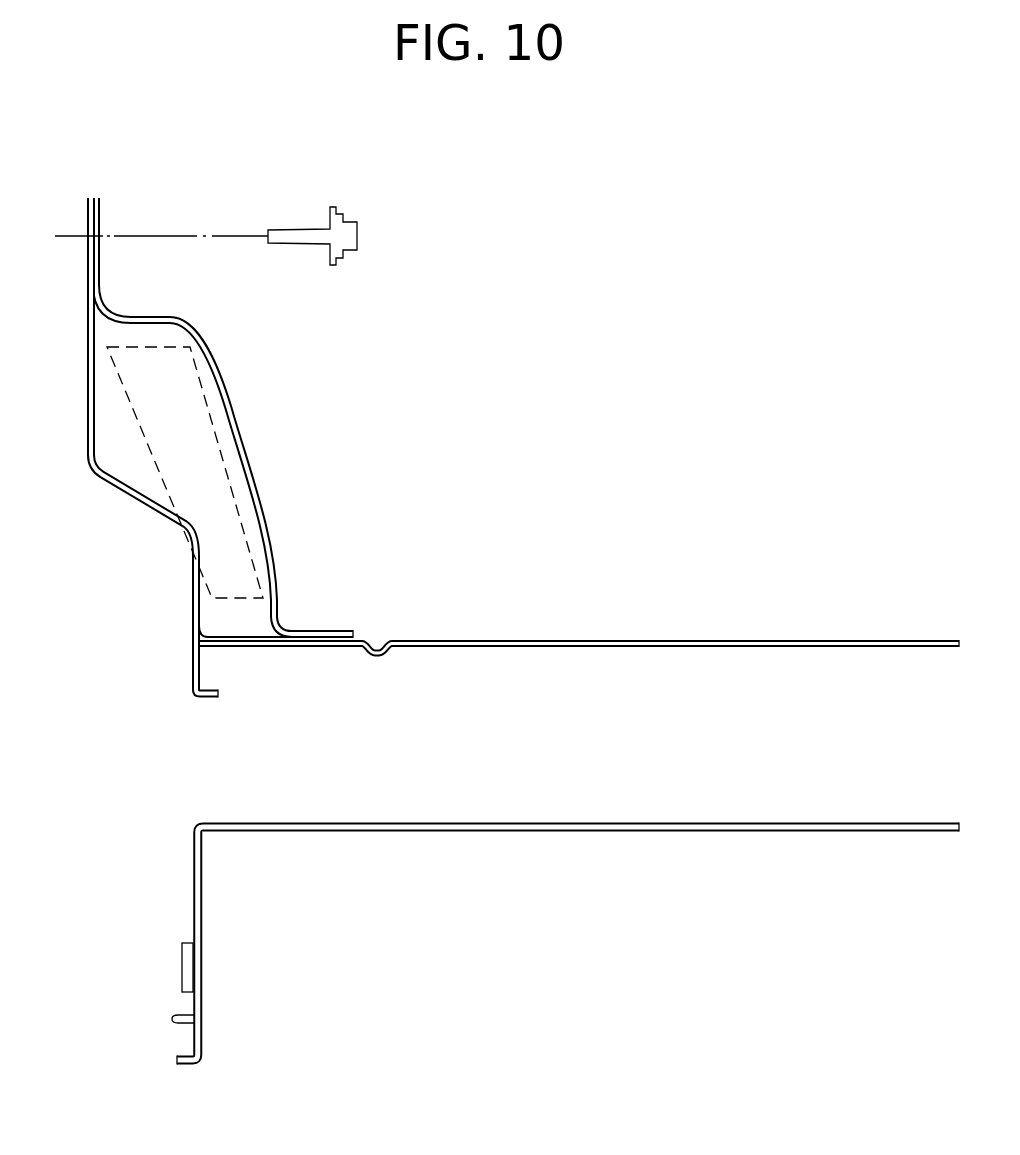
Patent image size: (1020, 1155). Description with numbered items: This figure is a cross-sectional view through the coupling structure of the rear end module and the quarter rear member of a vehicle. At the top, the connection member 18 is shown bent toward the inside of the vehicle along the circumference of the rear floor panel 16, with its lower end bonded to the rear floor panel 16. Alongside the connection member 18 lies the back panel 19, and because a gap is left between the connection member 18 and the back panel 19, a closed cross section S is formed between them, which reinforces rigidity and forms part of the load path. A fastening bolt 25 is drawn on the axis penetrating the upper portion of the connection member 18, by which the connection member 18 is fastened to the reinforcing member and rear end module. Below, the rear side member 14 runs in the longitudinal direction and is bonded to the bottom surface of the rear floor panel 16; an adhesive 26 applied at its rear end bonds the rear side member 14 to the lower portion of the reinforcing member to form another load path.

The rear side member 14 is at (650, 834).
The rear floor panel 16 is at (548, 639).
The connection member 18 is at (266, 497).
The back panel 19 is at (107, 497).
The fastening bolt 25 is at (355, 236).
The adhesive 26 is at (182, 968).
The closed cross section S is at (250, 542).